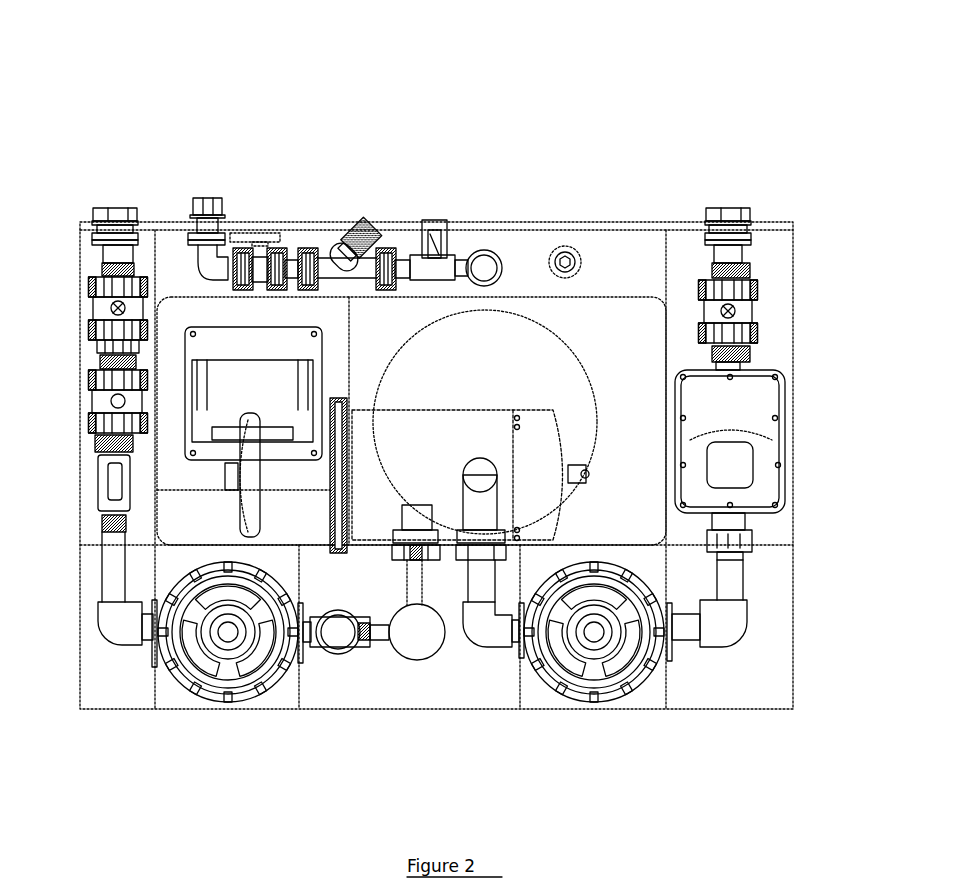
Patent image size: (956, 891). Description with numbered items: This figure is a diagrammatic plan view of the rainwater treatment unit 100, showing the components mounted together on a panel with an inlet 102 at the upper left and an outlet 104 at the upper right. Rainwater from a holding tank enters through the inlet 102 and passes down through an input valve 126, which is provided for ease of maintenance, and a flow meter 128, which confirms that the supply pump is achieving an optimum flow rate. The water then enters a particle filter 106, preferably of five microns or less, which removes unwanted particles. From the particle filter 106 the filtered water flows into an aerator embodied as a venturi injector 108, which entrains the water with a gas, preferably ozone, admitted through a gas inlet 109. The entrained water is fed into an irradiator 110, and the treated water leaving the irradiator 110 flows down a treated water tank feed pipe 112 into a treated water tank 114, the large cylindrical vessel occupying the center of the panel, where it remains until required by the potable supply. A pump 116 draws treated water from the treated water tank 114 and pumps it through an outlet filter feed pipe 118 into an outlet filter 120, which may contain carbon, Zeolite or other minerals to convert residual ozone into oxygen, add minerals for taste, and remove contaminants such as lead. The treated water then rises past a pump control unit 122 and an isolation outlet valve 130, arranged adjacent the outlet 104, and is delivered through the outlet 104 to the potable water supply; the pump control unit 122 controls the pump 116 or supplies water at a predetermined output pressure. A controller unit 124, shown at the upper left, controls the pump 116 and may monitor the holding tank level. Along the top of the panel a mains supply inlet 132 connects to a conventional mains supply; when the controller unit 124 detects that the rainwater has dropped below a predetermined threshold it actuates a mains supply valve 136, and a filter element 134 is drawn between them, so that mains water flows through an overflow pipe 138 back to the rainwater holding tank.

The rainwater treatment unit 100 is at (172, 112).
The inlet 102 is at (118, 206).
The outlet 104 is at (732, 206).
The particle filter 106 is at (172, 675).
The venturi injector 108 is at (350, 652).
The gas inlet 109 is at (388, 645).
The irradiator 110 is at (421, 660).
The treated water tank feed pipe 112 is at (410, 520).
The treated water tank 114 is at (622, 298).
The pump 116 is at (440, 408).
The outlet filter feed pipe 118 is at (482, 484).
The outlet filter 120 is at (662, 667).
The pump control unit 122 is at (786, 467).
The controller unit 124 is at (198, 325).
The input valve 126 is at (97, 343).
The flow meter 128 is at (100, 480).
The isolation outlet valve 130 is at (760, 297).
The mains supply inlet 132 is at (207, 210).
The angled valve 134 is at (360, 222).
The mains supply valve 136 is at (437, 222).
The overflow pipe 138 is at (498, 260).